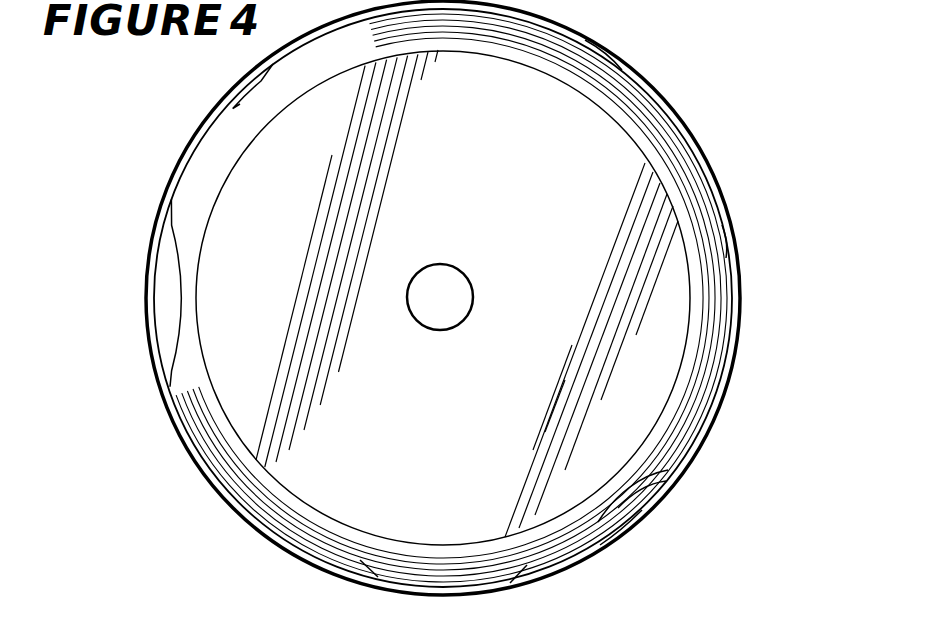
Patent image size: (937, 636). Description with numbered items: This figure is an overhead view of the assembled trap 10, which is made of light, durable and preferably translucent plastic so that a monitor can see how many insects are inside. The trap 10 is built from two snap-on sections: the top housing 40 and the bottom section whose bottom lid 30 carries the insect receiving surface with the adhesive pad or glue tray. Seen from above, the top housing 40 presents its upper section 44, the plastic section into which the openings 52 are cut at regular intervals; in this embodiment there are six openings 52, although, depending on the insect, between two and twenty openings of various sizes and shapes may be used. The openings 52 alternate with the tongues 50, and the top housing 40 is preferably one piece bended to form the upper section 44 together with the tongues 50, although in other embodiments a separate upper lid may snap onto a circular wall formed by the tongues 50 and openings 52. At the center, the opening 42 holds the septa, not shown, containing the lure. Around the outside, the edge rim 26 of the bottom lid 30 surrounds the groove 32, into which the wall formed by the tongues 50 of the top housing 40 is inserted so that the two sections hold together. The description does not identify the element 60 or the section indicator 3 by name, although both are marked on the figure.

The trap 10 is at (735, 635).
The edge rim 26 is at (735, 354).
The bottom lid 30 is at (799, 15).
The groove 32 is at (674, 472).
The top housing 40 is at (150, 155).
The opening 42 is at (437, 268).
The upper section 44 is at (560, 203).
The tongues 50 is at (202, 133).
The openings 52 is at (265, 70).
The seal member 60 is at (388, 635).
The section line 3 is at (142, 298).